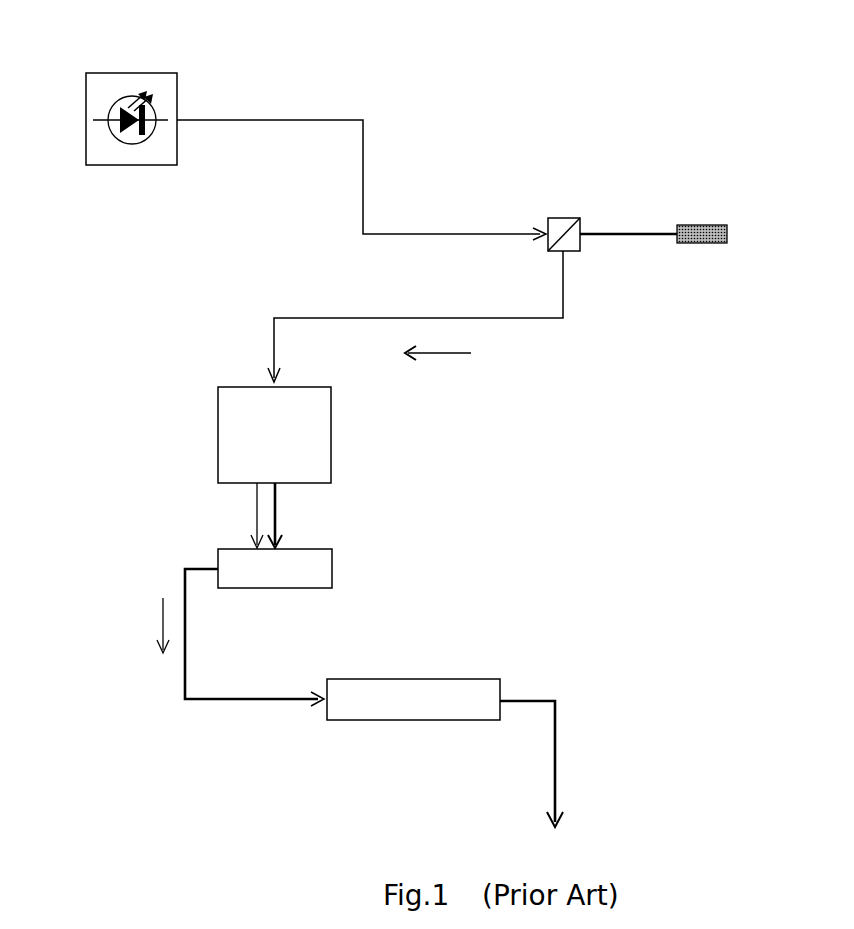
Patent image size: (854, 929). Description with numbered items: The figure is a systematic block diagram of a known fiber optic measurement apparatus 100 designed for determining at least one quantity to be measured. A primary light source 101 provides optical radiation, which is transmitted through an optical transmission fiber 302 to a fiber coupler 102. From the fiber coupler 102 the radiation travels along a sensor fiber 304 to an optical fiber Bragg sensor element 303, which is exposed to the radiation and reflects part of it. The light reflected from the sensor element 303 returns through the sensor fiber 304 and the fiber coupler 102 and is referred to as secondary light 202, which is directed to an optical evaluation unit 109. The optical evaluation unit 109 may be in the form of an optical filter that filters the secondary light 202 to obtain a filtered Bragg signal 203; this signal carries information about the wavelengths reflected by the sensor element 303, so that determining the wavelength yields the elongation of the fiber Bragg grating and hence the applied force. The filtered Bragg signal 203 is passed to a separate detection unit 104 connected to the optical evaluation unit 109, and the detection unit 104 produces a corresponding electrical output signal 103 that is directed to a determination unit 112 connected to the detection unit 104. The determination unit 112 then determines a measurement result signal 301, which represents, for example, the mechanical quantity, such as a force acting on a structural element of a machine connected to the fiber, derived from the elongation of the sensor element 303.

The optical system (prior art) 100 is at (659, 67).
The primary light source 101 is at (132, 72).
The fiber coupler 102 is at (565, 218).
The electrical signal 103 is at (162, 623).
The detection unit 104 is at (332, 568).
The optical evaluation unit 109 is at (218, 435).
The determination unit 112 is at (412, 720).
The secondary light 202 is at (442, 353).
The filtered Bragg signal 203 is at (255, 508).
The measurement result signal 301 is at (555, 749).
The optical transmission fiber 302 is at (282, 120).
The optical fiber Bragg sensor element 303 is at (708, 224).
The sensor fiber 304 is at (657, 236).